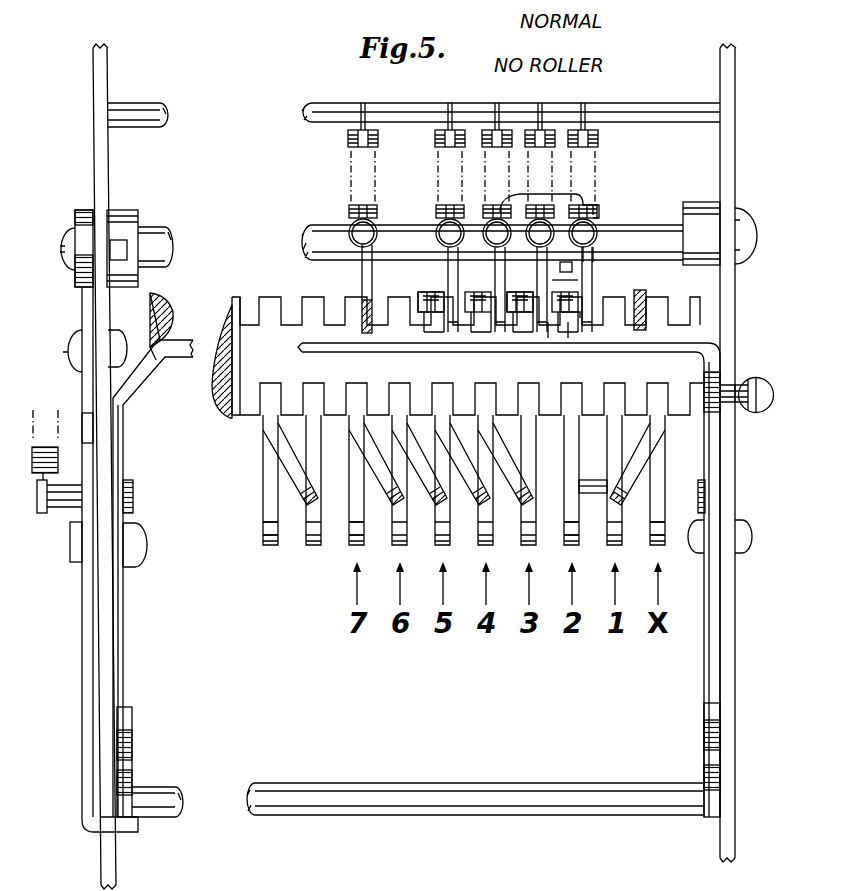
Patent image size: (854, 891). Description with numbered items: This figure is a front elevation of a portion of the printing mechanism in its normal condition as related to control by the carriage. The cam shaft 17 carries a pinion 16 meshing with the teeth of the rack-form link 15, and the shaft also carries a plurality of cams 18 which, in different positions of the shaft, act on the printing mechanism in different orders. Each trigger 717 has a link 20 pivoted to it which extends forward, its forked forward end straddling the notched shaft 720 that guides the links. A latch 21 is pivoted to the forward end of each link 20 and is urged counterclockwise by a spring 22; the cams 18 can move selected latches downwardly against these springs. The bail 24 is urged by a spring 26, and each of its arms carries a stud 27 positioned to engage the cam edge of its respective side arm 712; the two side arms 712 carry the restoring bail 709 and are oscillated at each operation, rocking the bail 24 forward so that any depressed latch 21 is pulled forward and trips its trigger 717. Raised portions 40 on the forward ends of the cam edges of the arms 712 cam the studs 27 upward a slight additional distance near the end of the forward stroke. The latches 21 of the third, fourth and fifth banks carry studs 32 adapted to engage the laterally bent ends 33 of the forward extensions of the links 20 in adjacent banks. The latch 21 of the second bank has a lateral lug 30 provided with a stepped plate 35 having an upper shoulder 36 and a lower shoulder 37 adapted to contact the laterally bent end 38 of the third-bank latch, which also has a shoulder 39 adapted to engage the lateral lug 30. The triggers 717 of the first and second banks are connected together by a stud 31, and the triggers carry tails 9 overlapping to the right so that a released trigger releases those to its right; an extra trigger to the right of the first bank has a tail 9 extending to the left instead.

The pinion 16 is at (80, 212).
The link 15 is at (86, 307).
The notched shaft 720 is at (146, 403).
The stud 27 is at (700, 488).
The side arms 712 is at (706, 640).
The raised portions 40 is at (710, 697).
The spring 22 is at (378, 143).
The cam shaft 17 is at (305, 243).
The cams 18 is at (522, 210).
The stepped plate 35 is at (570, 262).
The latch 21 is at (364, 278).
The stud 32 is at (438, 282).
The link 20 is at (376, 305).
The upper shoulder 36 is at (572, 270).
The lower shoulder 37 is at (578, 282).
The laterally bent ends 33 is at (432, 312).
The laterally bent end 38 is at (568, 318).
The bail 24 is at (310, 347).
The shoulder 39 is at (552, 332).
The lateral lug 30 is at (570, 332).
The spring 26 is at (752, 380).
The tails 9 is at (375, 478).
The stud 31 is at (590, 481).
The triggers 717 is at (347, 537).
The bail 709 is at (378, 792).